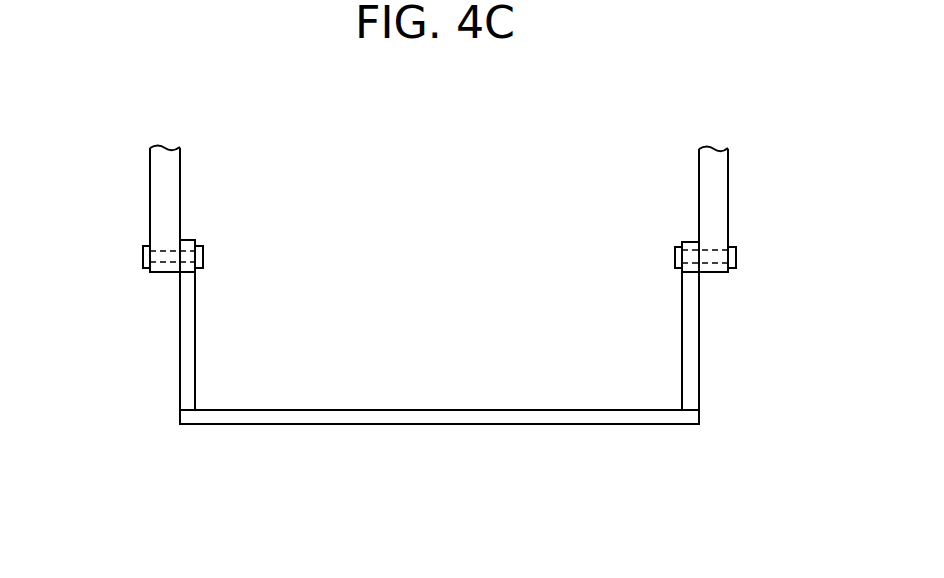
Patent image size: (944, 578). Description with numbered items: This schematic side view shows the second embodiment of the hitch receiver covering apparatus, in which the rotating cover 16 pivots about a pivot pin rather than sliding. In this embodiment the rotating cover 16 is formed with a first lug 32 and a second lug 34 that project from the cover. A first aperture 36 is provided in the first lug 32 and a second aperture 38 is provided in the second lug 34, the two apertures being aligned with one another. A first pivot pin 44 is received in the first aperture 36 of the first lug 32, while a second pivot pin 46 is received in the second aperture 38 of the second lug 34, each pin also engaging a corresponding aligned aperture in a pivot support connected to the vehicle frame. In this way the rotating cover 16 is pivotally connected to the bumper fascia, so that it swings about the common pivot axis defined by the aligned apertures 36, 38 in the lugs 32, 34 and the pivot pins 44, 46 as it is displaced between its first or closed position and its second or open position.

The rotating cover 16 is at (416, 424).
The first lug 32 is at (190, 360).
The second lug 34 is at (695, 360).
The first aperture 36 is at (184, 262).
The second aperture 38 is at (694, 250).
The first pivot pin 44 is at (205, 258).
The second pivot pin 46 is at (675, 259).